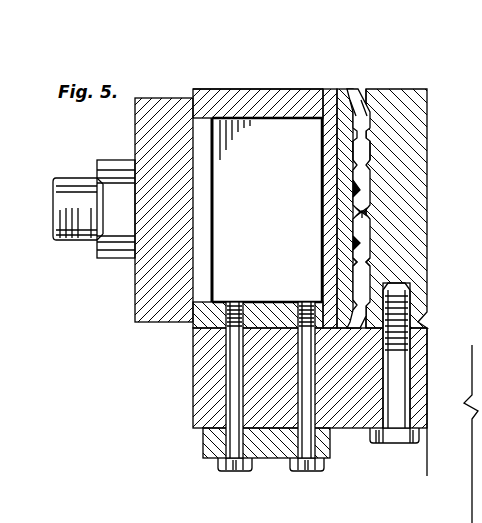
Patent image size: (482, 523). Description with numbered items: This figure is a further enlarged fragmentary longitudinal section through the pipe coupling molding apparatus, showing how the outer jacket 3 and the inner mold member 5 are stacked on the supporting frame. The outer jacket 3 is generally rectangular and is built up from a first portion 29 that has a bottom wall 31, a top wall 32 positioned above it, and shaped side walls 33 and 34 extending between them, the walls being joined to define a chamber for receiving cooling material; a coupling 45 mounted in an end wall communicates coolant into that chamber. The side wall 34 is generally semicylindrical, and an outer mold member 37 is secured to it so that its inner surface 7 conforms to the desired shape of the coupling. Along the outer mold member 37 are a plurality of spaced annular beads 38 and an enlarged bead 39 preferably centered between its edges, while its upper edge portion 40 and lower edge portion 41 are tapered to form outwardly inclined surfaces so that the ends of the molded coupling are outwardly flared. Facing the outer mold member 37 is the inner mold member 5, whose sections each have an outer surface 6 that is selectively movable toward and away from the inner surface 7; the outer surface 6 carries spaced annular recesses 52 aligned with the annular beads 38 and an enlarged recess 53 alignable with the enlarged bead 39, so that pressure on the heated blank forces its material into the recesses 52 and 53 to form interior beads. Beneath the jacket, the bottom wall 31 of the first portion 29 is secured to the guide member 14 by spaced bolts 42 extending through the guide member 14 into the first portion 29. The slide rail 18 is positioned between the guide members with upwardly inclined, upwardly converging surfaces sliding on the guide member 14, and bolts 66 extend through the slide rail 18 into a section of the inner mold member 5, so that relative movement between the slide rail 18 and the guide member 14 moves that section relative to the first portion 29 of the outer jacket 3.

The outer jacket 3 is at (279, 86).
The first portion 29 is at (208, 70).
The upper edge portion 40 is at (349, 90).
The inner mold member 5 is at (405, 83).
The top wall 32 is at (256, 120).
The side wall 33 is at (213, 226).
The side wall 34 is at (321, 266).
The annular beads 38 is at (362, 162).
The outer mold member 37 is at (366, 180).
The outer surface 6 is at (352, 188).
The enlarged bead 39 is at (364, 212).
The enlarged recess 53 is at (370, 219).
The inner surface 7 is at (359, 244).
The annular recesses 52 is at (368, 266).
The bottom wall 31 is at (268, 292).
The guide member 14 is at (192, 384).
The slide rail 18 is at (343, 430).
The bolts 42 is at (235, 462).
The lower edge portion 41 is at (384, 345).
The bolts 66 is at (387, 444).
The couplings 45 is at (471, 480).